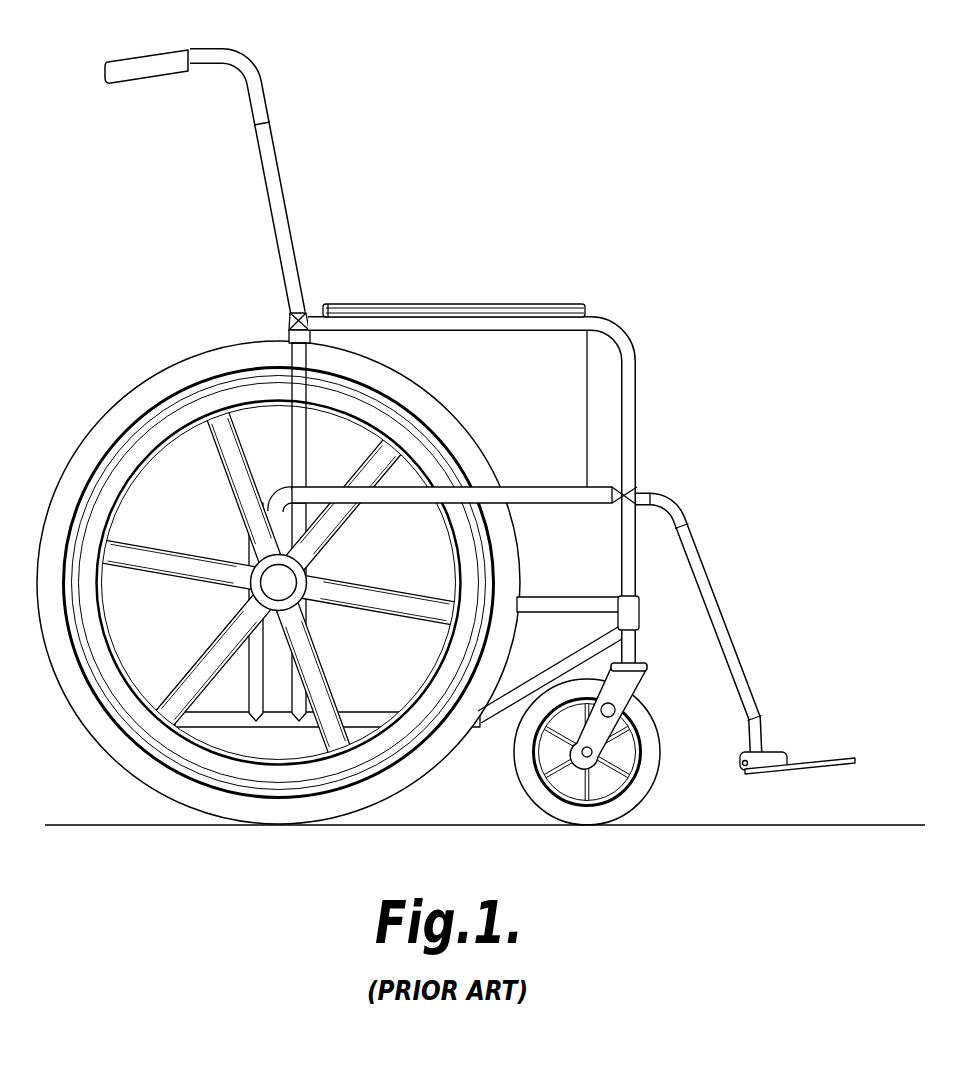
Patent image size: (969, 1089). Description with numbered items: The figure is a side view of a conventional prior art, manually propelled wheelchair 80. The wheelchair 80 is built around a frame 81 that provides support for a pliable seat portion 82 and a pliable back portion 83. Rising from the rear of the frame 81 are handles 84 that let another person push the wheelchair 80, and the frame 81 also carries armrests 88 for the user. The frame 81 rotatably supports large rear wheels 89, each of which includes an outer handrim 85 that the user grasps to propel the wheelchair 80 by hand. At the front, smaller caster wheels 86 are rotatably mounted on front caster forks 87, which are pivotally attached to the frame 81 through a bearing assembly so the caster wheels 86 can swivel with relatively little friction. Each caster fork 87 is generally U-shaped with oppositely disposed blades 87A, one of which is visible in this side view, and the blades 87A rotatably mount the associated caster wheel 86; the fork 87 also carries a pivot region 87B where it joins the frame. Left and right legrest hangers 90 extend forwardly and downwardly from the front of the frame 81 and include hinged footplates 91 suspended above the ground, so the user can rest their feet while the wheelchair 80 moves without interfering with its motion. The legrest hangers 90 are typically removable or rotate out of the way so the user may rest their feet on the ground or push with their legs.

The wheelchair 80 is at (571, 75).
The frame 81 is at (264, 193).
The pliable seat portion 82 is at (597, 490).
The pliable back portion 83 is at (273, 119).
The handles 84 is at (141, 57).
The outer handrim 85 is at (126, 437).
The front caster wheels 86 is at (653, 762).
The front caster forks 87 is at (655, 668).
The blades 87A is at (641, 725).
The caster pivot 87B is at (621, 694).
The armrests 88 is at (541, 311).
The large rear wheels 89 is at (233, 350).
The legrest hangers 90 is at (748, 611).
The hinged footplates 91 is at (809, 757).